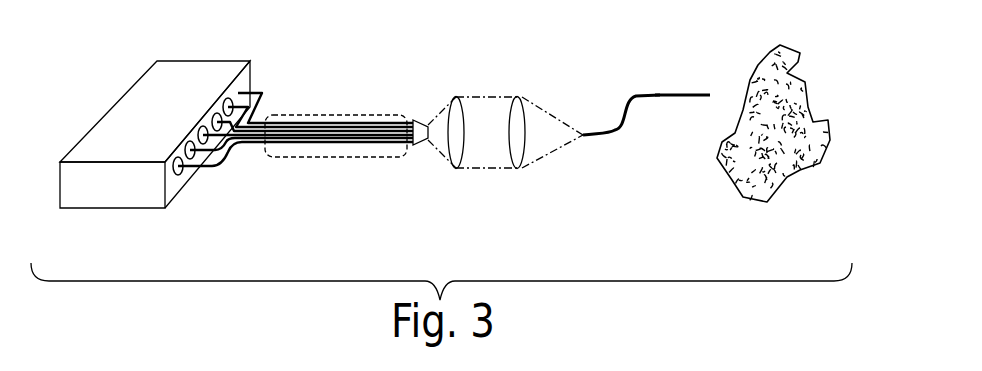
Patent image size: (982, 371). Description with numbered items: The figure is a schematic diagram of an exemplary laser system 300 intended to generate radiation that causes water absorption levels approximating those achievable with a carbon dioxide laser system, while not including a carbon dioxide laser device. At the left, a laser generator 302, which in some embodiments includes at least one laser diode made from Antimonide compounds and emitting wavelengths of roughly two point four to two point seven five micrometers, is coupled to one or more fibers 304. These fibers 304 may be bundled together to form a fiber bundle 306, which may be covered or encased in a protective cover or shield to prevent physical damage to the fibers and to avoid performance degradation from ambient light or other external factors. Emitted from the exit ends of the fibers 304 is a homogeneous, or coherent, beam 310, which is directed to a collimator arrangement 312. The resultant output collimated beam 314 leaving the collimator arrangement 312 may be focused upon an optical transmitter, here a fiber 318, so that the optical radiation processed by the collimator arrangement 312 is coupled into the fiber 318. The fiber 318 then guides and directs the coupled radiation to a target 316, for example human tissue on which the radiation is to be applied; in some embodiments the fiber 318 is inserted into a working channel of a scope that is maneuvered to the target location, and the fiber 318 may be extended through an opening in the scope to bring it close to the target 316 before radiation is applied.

The laser system 300 is at (121, 69).
The laser generator 302 is at (87, 140).
The fibers 304 is at (263, 92).
The fiber bundle 306 is at (343, 143).
The homogeneous beam 310 is at (437, 153).
The collimator arrangement 312 is at (448, 177).
The output collimated beam 314 is at (543, 112).
The target 316 is at (728, 180).
The fiber 318 is at (653, 93).